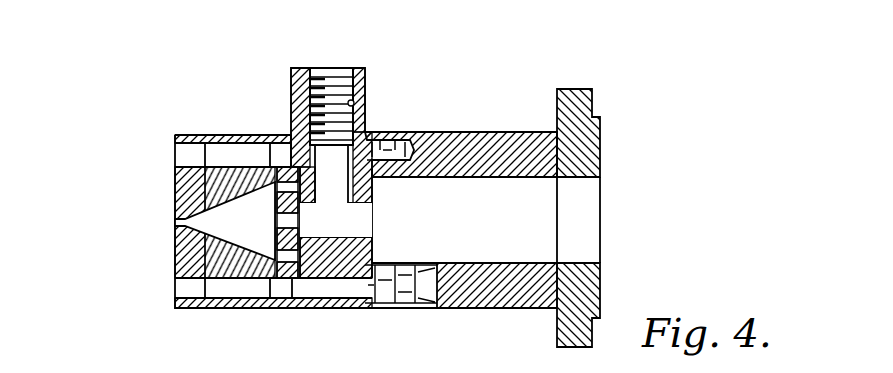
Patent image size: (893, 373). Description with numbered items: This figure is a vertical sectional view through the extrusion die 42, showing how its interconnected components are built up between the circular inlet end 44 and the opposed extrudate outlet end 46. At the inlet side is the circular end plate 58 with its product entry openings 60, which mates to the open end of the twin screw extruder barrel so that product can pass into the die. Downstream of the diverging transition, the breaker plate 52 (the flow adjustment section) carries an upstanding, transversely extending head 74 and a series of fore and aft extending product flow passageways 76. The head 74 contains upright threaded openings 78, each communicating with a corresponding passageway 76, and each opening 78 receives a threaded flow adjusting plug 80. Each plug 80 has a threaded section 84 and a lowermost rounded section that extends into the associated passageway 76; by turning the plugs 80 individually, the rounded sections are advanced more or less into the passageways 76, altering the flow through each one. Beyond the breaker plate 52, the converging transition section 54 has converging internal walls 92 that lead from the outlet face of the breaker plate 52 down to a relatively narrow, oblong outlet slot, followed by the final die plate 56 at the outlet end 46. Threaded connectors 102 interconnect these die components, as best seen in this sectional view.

The extrusion die 42 is at (160, 110).
The circular inlet end 44 is at (635, 209).
The extrudate outlet end 46 is at (155, 212).
The breaker plate 52 is at (267, 133).
The converging transition section 54 is at (222, 310).
The final die plate 56 is at (175, 258).
The circular end plate 58 is at (483, 297).
The product entry openings 60 is at (585, 245).
The head 74 is at (367, 115).
The product flow passageways 76 is at (358, 225).
The threaded openings 78 is at (375, 70).
The threaded flow adjusting plug 80 is at (333, 68).
The threaded section 84 is at (354, 103).
The converging internal walls 92 is at (246, 216).
The threaded connectors 102 is at (412, 143).